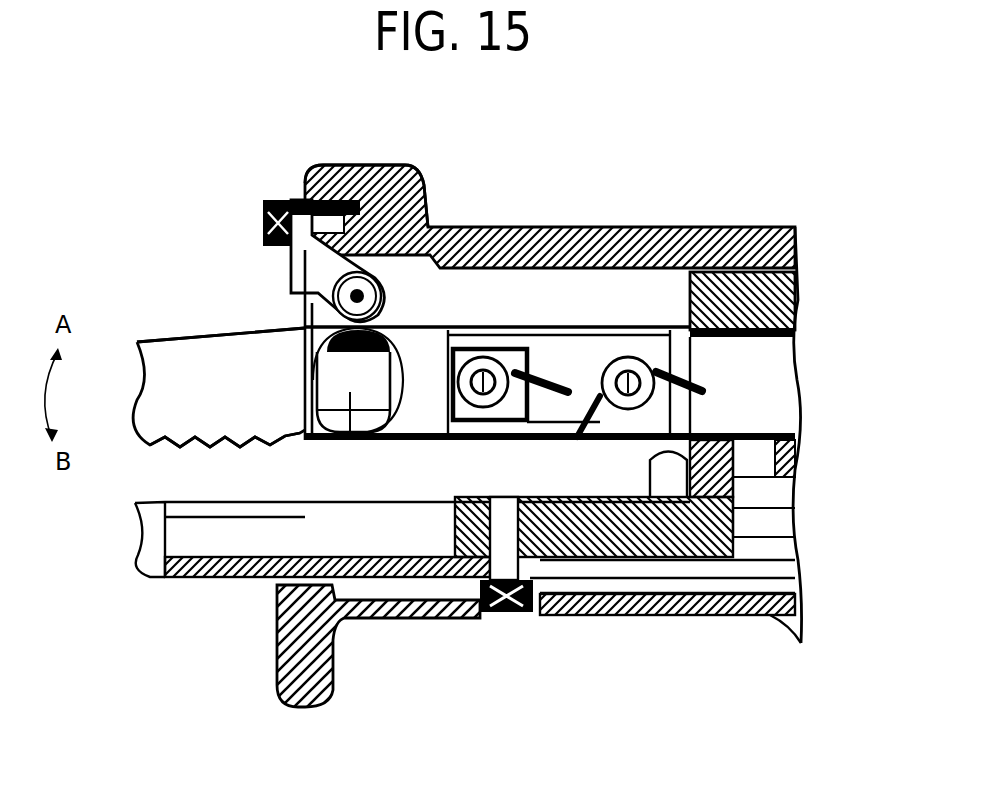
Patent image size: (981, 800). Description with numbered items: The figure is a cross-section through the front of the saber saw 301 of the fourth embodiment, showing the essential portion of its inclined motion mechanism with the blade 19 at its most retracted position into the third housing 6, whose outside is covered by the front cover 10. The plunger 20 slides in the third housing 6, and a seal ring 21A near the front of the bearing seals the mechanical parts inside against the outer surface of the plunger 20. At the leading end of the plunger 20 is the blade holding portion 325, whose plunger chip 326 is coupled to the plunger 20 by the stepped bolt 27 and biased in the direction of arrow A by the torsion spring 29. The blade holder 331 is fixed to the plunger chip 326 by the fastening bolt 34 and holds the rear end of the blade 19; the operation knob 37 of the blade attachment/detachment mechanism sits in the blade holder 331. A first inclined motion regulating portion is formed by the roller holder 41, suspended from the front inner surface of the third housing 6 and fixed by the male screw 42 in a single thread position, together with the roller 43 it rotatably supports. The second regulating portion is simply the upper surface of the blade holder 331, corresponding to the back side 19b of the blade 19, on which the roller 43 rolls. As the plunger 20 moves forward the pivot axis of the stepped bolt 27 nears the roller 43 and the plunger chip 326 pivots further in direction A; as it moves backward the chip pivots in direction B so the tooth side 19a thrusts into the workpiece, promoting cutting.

The front cover 10 is at (763, 228).
The third housing 6 is at (797, 285).
The seal ring 21A is at (725, 310).
The roller 43 is at (440, 226).
The male screw 42 is at (263, 218).
The roller holder 41 is at (305, 272).
The blade holder 331 is at (548, 333).
The operation knob 37 is at (355, 390).
The fastening bolt 34 is at (481, 408).
The stepped bolt 27 is at (630, 380).
The torsion spring 29 is at (706, 380).
The plunger 20 is at (757, 402).
The plunger chip 326 is at (553, 422).
The blade holding portion 325 is at (402, 450).
The blade 19 is at (170, 382).
The back side 19b is at (165, 338).
The tooth side 19a is at (165, 447).
The saber saw 301 is at (764, 665).